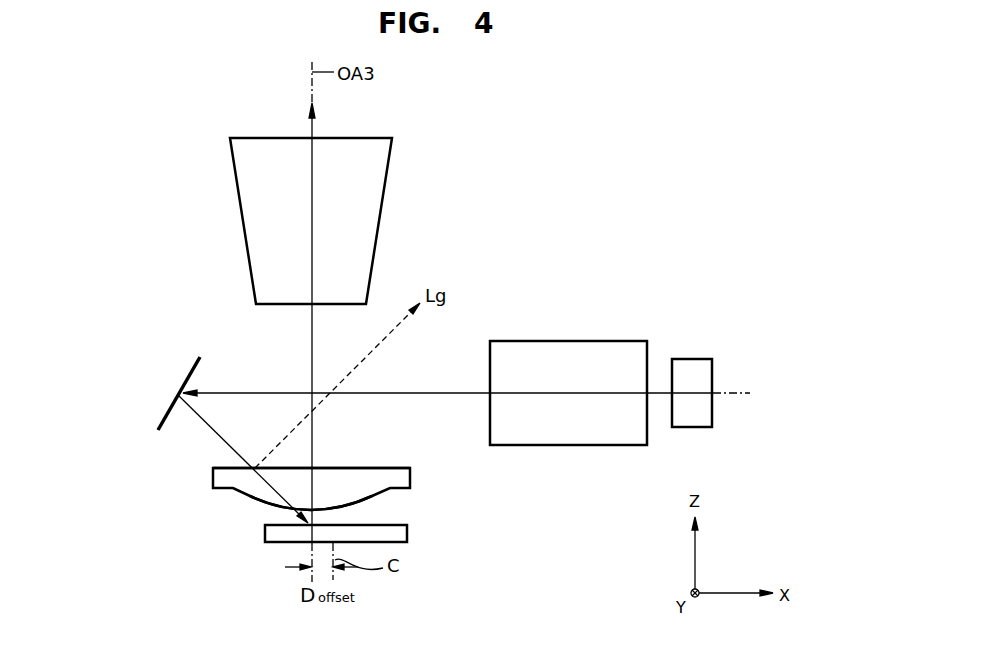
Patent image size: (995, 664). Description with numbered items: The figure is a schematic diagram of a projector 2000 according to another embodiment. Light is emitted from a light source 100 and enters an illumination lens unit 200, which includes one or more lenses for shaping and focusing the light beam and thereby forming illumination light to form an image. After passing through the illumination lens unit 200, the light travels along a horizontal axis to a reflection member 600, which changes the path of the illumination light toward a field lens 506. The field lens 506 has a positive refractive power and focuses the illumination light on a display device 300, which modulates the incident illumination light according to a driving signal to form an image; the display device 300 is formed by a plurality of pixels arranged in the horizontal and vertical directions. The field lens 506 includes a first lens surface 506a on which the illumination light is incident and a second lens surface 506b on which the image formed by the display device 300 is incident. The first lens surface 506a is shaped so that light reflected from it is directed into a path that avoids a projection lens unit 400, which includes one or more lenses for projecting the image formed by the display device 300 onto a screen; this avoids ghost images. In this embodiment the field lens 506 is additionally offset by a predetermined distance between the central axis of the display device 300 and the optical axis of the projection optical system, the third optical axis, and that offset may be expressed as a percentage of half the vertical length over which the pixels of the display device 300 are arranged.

The light source 100 is at (692, 360).
The illumination lens unit 200 is at (566, 342).
The display device 300 is at (265, 531).
The projection lens unit 400 is at (250, 224).
The field lens 506 is at (297, 475).
The first lens surface 506a is at (363, 468).
The second lens surface 506b is at (372, 498).
The reflection member 600 is at (175, 398).
The projector 2000 is at (705, 192).